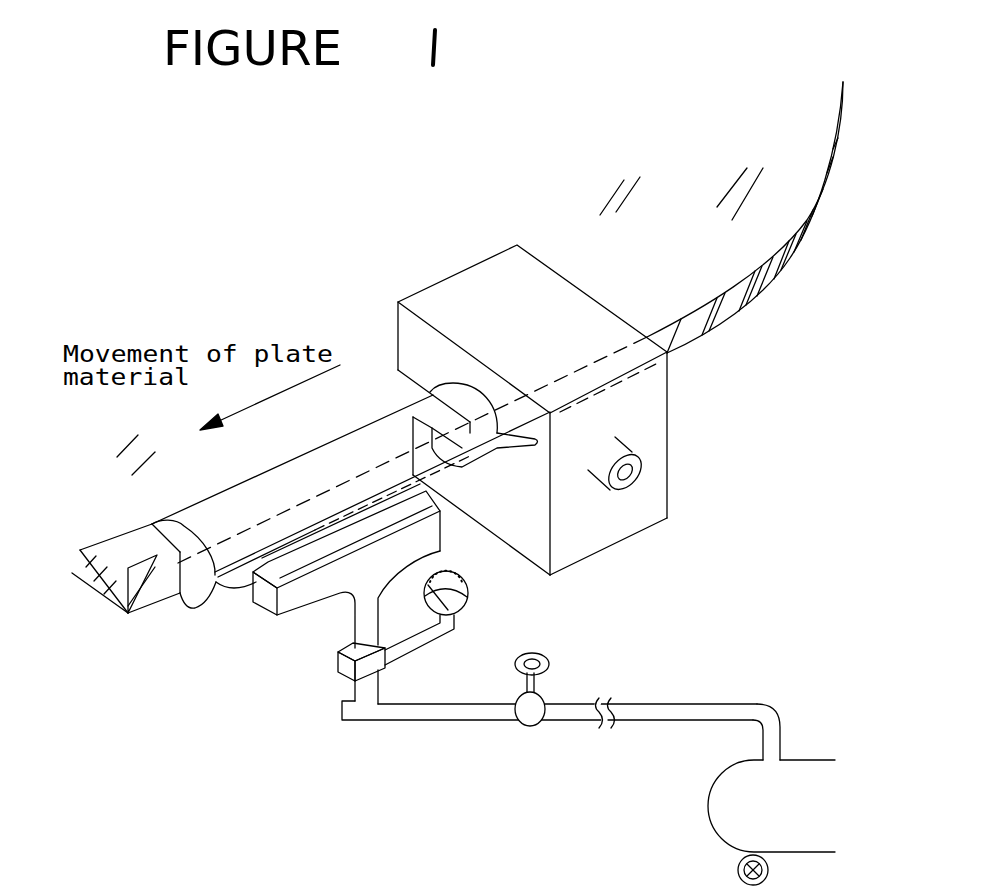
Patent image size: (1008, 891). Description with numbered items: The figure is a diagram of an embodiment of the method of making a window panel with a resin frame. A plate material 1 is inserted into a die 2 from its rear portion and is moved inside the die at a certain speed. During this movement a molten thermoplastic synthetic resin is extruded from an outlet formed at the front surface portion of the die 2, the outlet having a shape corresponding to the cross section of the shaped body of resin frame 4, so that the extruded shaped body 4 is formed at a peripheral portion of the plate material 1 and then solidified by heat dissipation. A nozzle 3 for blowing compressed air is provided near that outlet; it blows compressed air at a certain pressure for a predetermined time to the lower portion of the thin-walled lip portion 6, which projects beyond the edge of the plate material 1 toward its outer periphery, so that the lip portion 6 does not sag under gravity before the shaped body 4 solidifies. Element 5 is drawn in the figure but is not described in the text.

The plate material 1 is at (703, 278).
The die 2 is at (438, 308).
The nozzle 3 is at (290, 605).
The shaped body of resin frame 4 is at (353, 452).
The leading end of plate 5 is at (165, 536).
The lip portion 6 is at (230, 587).